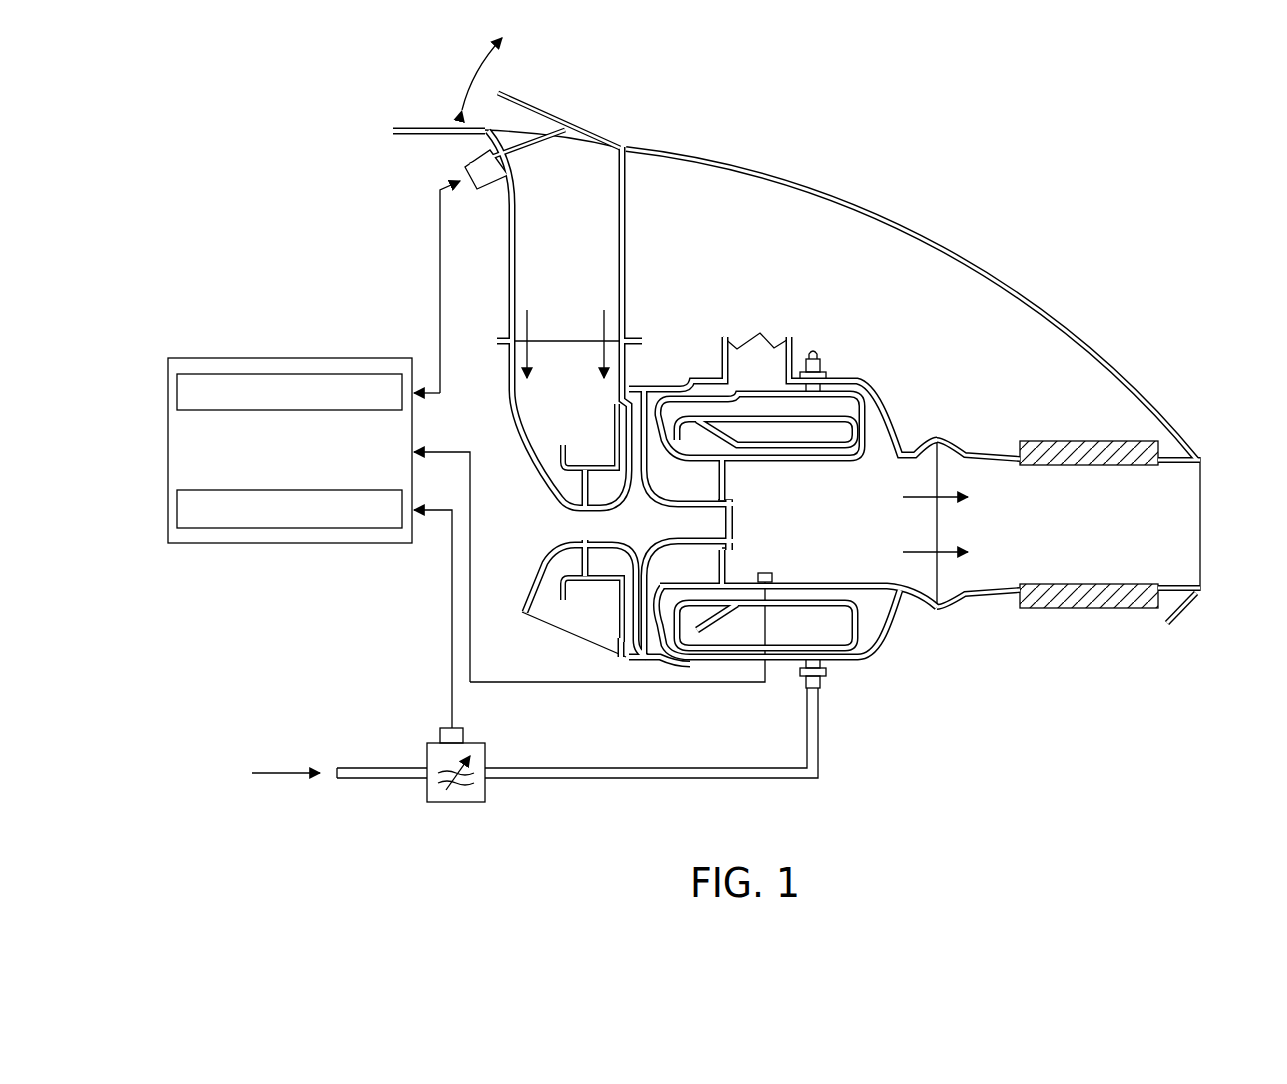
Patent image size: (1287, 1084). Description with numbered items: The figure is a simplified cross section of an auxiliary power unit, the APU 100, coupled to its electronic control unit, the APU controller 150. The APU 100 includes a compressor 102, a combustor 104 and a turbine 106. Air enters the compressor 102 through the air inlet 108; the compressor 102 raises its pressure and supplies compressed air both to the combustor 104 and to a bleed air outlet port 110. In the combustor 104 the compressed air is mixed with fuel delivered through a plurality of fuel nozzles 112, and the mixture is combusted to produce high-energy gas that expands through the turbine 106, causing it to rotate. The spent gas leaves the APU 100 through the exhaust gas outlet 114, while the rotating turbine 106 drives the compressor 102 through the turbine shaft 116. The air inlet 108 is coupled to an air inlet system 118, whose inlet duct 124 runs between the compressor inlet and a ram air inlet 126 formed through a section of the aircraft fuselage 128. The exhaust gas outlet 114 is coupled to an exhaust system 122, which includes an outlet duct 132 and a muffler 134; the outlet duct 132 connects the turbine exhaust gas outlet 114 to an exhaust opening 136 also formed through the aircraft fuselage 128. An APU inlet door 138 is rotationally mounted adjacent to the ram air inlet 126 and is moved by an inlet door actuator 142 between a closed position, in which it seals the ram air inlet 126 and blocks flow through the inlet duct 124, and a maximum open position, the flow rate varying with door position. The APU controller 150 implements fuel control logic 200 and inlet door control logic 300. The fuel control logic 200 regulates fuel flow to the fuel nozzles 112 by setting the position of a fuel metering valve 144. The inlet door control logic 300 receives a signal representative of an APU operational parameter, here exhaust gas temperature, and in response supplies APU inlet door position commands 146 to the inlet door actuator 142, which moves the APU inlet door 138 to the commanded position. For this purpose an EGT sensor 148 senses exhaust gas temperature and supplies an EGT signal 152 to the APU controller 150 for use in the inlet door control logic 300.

The auxiliary power unit 100 is at (717, 312).
The compressor 102 is at (600, 478).
The combustor 104 is at (843, 412).
The turbine 106 is at (727, 482).
The air inlet 108 is at (585, 374).
The bleed air outlet port 110 is at (767, 348).
The fuel nozzles 112 is at (830, 370).
The exhaust gas outlet 114 is at (905, 535).
The turbine shaft 116 is at (735, 528).
The air inlet system 118 is at (645, 172).
The exhaust system 122 is at (1003, 612).
The inlet duct 124 is at (508, 245).
The ram air inlet 126 is at (582, 150).
The aircraft fuselage 128 is at (843, 190).
The outlet duct 132 is at (988, 448).
The muffler 134 is at (1078, 447).
The exhaust opening 136 is at (1202, 540).
The APU inlet door 138 is at (547, 103).
The inlet door actuator 142 is at (462, 172).
The fuel metering valve 144 is at (485, 748).
The APU inlet door position commands 146 is at (440, 252).
The EGT sensor 148 is at (773, 574).
The APU controller 150 is at (168, 446).
The EGT signal 152 is at (470, 532).
The fuel control logic 200 is at (290, 530).
The inlet door control logic 300 is at (290, 372).